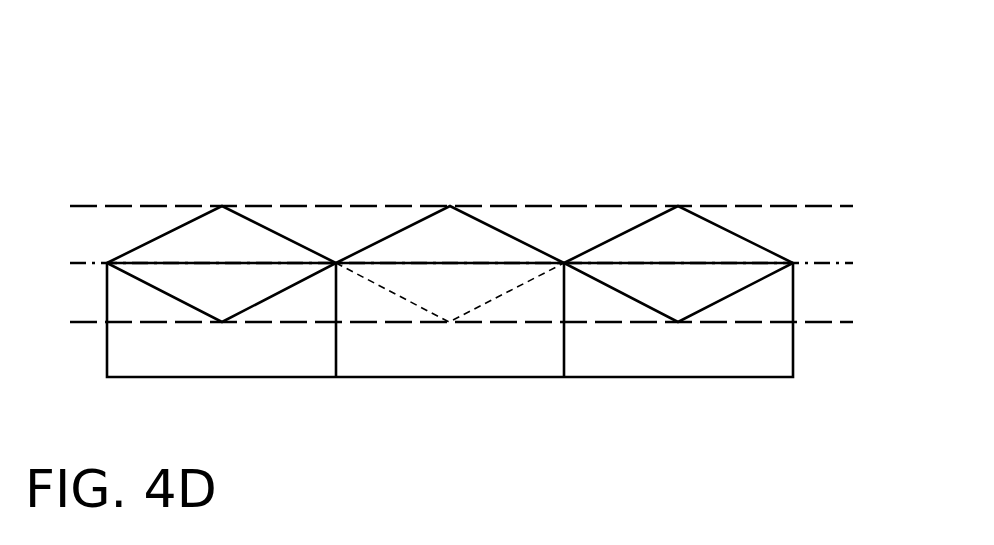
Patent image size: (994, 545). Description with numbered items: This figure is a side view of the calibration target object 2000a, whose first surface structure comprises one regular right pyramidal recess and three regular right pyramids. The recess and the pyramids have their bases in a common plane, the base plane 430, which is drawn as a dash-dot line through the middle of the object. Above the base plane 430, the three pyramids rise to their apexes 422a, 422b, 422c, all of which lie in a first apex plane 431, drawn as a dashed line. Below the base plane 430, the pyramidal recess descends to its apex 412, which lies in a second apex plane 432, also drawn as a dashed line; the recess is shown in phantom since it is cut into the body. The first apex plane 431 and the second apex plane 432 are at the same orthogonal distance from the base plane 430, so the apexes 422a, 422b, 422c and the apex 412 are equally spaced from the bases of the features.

The calibration target object 2000a is at (101, 89).
The apex of pyramid 422a is at (450, 206).
The apex of pyramid 422b is at (222, 206).
The apex of pyramid 422c is at (678, 206).
The apex of pyramidal recess 412 is at (449, 322).
The first apex plane 431 is at (805, 206).
The base plane 430 is at (830, 263).
The second apex plane 432 is at (830, 322).